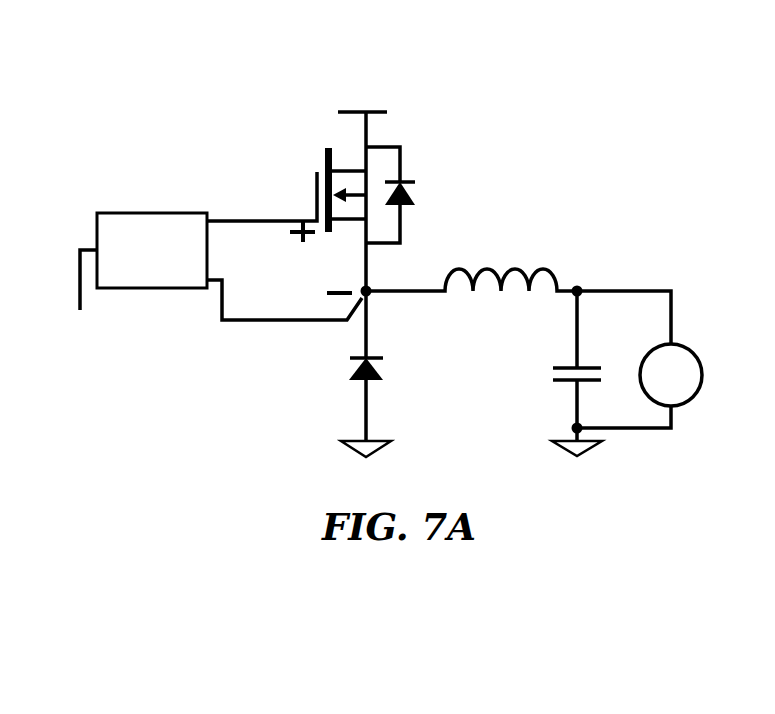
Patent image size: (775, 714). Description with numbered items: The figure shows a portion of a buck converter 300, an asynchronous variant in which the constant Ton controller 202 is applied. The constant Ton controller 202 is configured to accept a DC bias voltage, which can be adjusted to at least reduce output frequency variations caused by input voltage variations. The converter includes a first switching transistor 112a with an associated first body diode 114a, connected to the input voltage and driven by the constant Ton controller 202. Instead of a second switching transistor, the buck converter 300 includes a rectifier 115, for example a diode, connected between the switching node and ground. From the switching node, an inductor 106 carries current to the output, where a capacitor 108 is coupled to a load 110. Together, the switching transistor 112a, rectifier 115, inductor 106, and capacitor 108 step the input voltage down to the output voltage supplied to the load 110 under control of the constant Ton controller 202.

The buck converter 300 is at (550, 134).
The constant Ton controller 202 is at (156, 213).
The first switching transistor 112a is at (325, 149).
The first body diode 114a is at (415, 200).
The inductor 106 is at (490, 268).
The capacitor 108 is at (556, 382).
The load 110 is at (676, 345).
The rectifier 115 is at (348, 378).